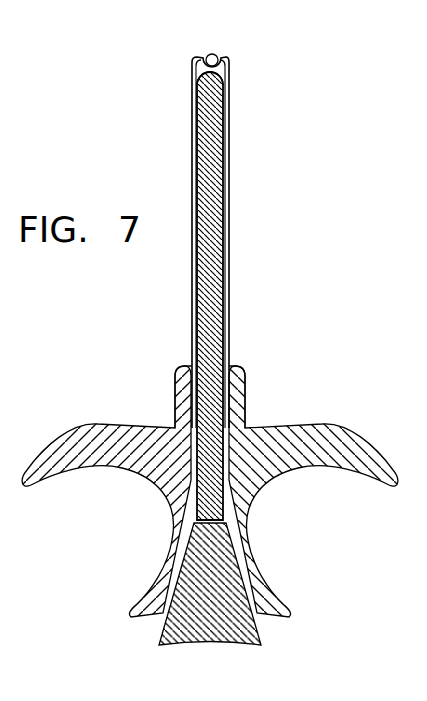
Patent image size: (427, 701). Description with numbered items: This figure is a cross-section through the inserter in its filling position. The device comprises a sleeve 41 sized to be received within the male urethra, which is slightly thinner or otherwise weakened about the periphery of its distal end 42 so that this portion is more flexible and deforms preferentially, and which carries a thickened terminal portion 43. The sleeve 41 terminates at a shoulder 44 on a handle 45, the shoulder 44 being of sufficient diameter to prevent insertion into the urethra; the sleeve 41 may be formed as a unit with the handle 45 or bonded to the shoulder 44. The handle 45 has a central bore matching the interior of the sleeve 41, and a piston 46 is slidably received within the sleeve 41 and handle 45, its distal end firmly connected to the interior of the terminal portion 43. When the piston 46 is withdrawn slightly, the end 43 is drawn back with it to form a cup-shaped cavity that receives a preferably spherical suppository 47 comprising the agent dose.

The sleeve 41 is at (229, 208).
The distal end of sleeve 42 is at (229, 78).
The thickened terminal portion 43 is at (199, 80).
The shoulder 44 is at (176, 390).
The handle 45 is at (126, 524).
The piston 46 is at (214, 318).
The suppository 47 is at (214, 54).